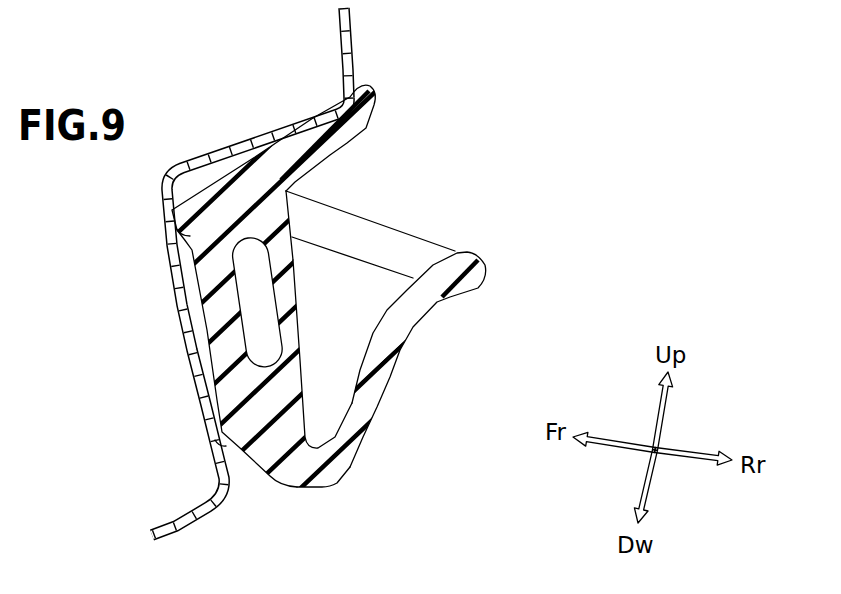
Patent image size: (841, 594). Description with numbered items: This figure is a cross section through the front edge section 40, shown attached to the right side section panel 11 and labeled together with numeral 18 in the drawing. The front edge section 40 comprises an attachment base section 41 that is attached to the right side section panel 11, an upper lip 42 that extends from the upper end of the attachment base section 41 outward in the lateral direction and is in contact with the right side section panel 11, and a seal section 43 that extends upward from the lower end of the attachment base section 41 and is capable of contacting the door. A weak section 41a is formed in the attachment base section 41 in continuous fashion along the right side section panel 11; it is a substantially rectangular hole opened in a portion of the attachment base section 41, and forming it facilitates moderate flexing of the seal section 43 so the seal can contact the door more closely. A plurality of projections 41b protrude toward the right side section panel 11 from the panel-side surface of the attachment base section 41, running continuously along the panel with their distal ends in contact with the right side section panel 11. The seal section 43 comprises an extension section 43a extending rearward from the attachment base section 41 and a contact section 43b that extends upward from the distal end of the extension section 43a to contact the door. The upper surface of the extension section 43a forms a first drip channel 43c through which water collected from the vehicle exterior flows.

The right side section panel 11 is at (370, 39).
The clip 18 is at (280, 297).
The front edge section 40 is at (280, 297).
The attachment base section 41 is at (186, 302).
The weak section 41a is at (242, 314).
The projections 41b is at (178, 242).
The upper lip 42 is at (378, 103).
The seal section 43 is at (393, 361).
The extension section 43a is at (364, 497).
The contact section 43b is at (397, 373).
The first drip channel 43c is at (350, 405).